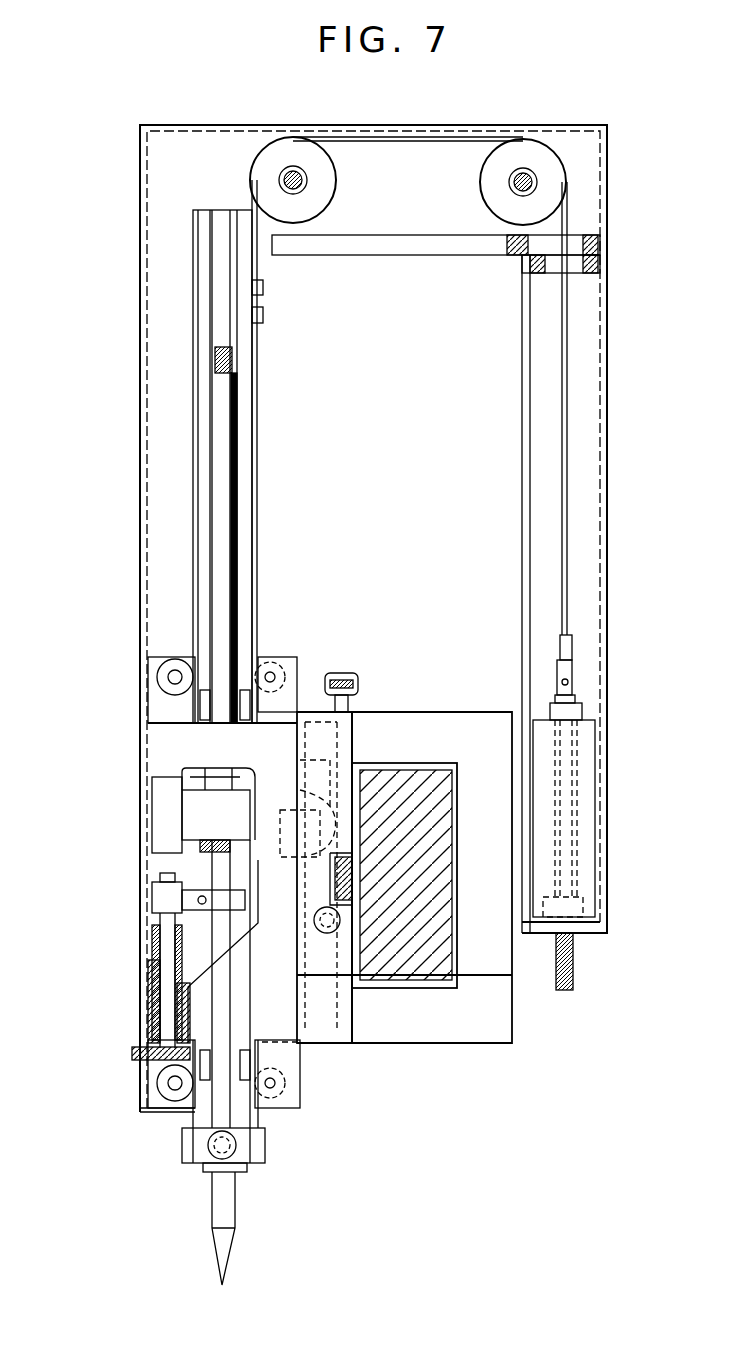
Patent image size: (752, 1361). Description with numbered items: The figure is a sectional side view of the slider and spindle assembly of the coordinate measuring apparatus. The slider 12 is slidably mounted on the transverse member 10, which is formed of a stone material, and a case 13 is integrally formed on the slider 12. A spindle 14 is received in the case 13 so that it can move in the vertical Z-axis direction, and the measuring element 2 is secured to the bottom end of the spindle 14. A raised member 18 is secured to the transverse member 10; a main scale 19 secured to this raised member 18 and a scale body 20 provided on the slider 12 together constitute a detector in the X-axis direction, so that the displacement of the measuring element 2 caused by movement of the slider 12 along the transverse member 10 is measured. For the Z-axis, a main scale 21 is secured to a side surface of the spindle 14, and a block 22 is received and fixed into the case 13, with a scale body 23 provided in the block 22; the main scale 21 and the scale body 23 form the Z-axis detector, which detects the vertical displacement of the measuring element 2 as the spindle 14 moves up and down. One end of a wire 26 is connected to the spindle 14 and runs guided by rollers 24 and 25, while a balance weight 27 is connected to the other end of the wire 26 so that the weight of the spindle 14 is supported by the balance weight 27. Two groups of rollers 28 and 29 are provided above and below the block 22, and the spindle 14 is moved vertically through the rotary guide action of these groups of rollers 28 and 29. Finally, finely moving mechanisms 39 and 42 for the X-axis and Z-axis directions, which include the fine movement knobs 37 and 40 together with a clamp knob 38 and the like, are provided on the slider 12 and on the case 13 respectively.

The measuring element 2 is at (218, 1240).
The transverse member 10 is at (443, 950).
The slider 12 is at (340, 960).
The case 13 is at (142, 462).
The spindle 14 is at (250, 400).
The raised member 18 is at (358, 872).
The main scale 19 is at (357, 873).
The scale body 20 is at (300, 880).
The main scale 21 is at (222, 517).
The block 22 is at (150, 748).
The scale body 23 is at (190, 812).
The roller 24 is at (288, 140).
The roller 25 is at (524, 140).
The wire 26 is at (407, 135).
The balance weight 27 is at (587, 840).
The group of rollers 28 is at (157, 677).
The group of rollers 29 is at (160, 1088).
The fine movement knob 37 is at (325, 935).
The clamp knob 38 is at (345, 672).
The finely moving mechanism 39 is at (330, 790).
The fine movement knob 40 is at (134, 1055).
The finely moving mechanism 42 is at (152, 926).